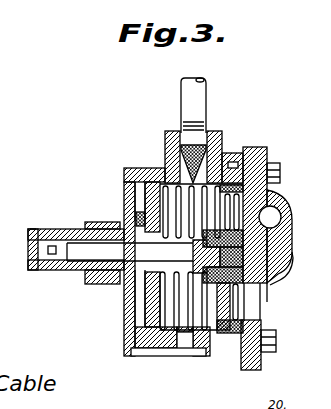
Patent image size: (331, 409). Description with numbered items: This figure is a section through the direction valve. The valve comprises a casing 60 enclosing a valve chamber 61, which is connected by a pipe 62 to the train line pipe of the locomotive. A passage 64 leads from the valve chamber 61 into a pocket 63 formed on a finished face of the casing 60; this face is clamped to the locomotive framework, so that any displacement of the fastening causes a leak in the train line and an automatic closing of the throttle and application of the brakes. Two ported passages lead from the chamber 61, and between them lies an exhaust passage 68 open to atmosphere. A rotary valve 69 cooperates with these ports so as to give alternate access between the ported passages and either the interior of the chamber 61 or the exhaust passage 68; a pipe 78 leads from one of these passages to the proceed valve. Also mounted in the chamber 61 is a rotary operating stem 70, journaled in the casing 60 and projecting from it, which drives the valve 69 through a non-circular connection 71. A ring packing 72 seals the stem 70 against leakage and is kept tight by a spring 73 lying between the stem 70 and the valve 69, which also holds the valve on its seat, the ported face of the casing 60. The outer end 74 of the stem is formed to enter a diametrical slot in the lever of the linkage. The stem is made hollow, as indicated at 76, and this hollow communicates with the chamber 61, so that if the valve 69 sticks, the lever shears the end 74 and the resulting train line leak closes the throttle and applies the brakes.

The casing 60 is at (131, 169).
The valve chamber 61 is at (125, 320).
The pipe 62 is at (212, 118).
The pocket 63 is at (173, 356).
The passage 64 is at (185, 344).
The exhaust passage 68 is at (244, 306).
The rotary valve 69 is at (229, 362).
The rotary operating stem 70 is at (124, 184).
The non-circular connection 71 is at (276, 279).
The ring packing 72 is at (110, 216).
The spring 73 is at (228, 166).
The outer end of stem 74 is at (37, 229).
The hollow of stem 76 is at (82, 254).
The pipe 78 is at (324, 194).